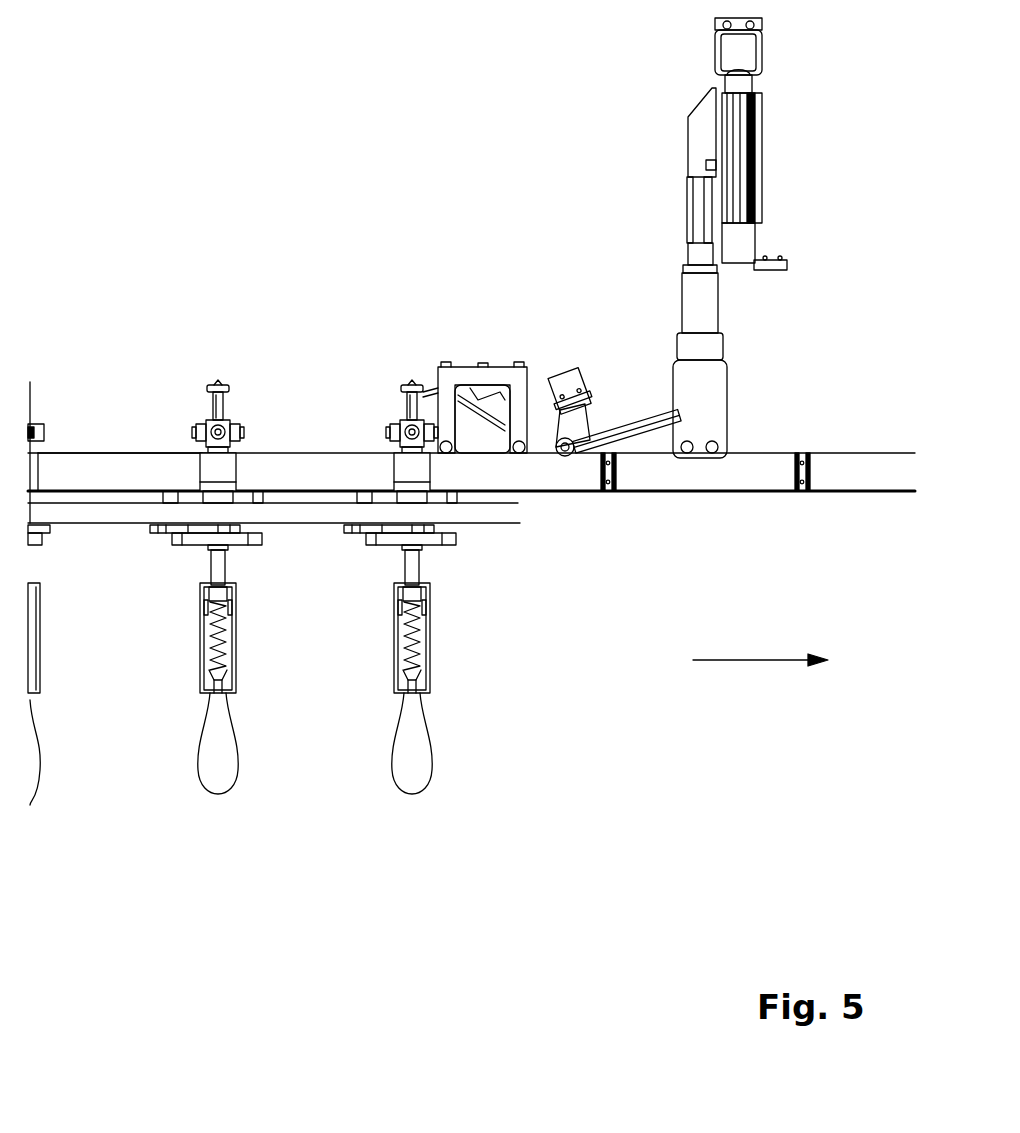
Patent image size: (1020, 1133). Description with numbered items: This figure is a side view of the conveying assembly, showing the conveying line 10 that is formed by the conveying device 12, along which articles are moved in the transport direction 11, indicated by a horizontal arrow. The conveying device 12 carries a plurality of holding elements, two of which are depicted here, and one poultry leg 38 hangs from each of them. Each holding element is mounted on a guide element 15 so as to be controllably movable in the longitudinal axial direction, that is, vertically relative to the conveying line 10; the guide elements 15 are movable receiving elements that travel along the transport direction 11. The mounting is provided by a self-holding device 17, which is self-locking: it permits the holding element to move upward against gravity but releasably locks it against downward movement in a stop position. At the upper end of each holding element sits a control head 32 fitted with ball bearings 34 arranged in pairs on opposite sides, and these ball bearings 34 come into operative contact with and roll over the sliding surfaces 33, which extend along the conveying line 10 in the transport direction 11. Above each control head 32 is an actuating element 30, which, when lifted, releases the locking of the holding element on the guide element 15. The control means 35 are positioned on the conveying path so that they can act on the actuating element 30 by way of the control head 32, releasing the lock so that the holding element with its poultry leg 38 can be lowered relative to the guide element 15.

The conveying line 10 is at (778, 577).
The transport direction 11 is at (755, 661).
The conveying device 12 is at (842, 412).
The guide element 15 is at (218, 492).
The self-holding device 17 is at (190, 463).
The actuating element 30 is at (218, 383).
The control head 32 is at (240, 392).
The sliding surfaces 33 is at (630, 425).
The ball bearings 34 is at (208, 424).
The control means 35 is at (503, 352).
The poultry leg 38 is at (216, 784).